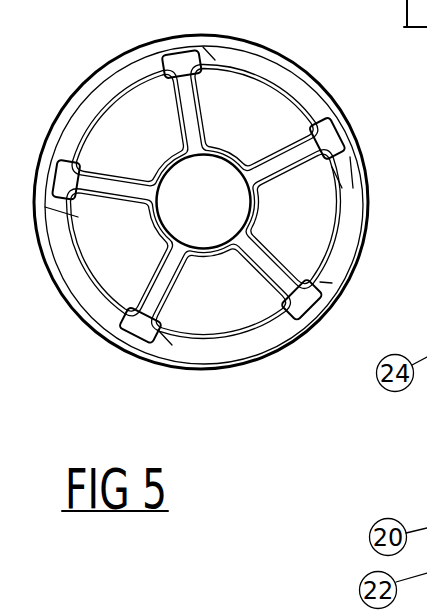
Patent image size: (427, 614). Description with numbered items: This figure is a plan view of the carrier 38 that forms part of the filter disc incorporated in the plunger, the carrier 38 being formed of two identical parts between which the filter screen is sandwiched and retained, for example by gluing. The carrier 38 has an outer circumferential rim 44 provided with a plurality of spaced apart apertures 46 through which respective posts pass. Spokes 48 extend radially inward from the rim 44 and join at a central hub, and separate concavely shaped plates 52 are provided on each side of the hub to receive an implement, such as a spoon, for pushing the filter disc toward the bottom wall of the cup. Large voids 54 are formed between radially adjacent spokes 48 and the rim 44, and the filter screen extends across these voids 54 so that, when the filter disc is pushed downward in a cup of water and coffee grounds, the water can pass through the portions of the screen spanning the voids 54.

The carrier 38 is at (248, 63).
The outer circumferential rim 44 is at (363, 143).
The apertures 46 is at (62, 185).
The spokes 48 is at (287, 158).
The concavely shaped plates 52 is at (198, 210).
The voids 54 is at (115, 252).